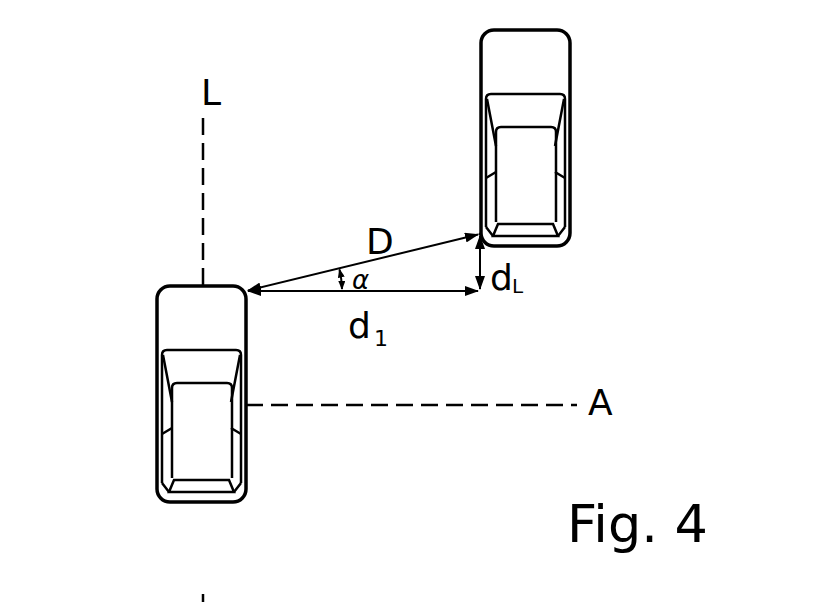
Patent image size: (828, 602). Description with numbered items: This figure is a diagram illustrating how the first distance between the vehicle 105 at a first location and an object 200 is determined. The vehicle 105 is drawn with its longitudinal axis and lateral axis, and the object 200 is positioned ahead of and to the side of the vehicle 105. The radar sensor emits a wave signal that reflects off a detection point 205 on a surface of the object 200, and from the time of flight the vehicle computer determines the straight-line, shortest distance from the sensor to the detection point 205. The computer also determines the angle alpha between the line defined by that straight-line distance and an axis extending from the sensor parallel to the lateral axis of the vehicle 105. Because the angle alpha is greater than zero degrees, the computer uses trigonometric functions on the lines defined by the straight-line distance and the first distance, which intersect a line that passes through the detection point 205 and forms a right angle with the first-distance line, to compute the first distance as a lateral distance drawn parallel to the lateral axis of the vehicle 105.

The vehicle 105 is at (157, 430).
The object 200 is at (570, 190).
The detection point 205 is at (478, 231).